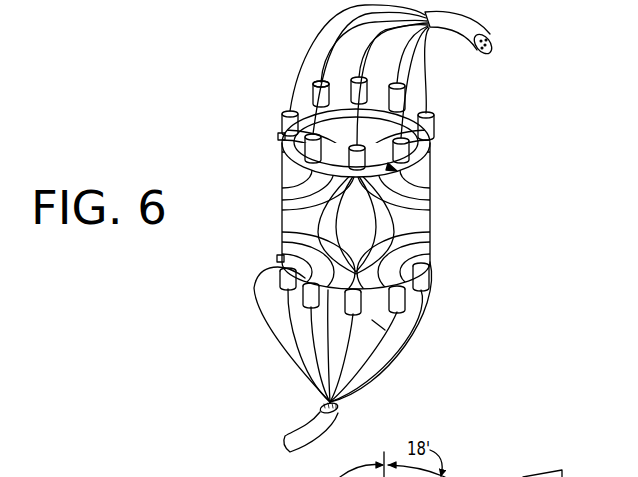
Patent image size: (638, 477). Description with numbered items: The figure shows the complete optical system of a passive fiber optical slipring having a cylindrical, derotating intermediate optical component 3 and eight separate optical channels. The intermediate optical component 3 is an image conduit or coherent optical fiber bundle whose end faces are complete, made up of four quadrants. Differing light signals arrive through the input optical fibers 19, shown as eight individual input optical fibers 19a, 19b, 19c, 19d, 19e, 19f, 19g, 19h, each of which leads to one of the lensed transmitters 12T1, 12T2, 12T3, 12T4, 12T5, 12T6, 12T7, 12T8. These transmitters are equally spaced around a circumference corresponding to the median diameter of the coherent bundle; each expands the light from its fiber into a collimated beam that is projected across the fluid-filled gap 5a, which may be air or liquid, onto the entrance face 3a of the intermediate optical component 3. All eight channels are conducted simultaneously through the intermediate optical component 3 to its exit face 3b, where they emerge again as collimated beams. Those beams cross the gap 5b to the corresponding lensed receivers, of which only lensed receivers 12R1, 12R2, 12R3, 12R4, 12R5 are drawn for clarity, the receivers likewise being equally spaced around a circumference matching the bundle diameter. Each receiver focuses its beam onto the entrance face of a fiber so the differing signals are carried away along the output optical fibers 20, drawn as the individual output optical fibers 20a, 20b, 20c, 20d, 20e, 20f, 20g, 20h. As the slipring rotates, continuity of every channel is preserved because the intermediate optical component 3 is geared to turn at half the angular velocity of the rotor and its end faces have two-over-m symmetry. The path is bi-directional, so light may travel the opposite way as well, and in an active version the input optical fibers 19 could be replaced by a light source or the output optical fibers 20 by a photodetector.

The intermediate optical component 3 is at (361, 231).
The entrance face 3a is at (413, 170).
The exit face 3b is at (372, 320).
The gap 5a is at (278, 136).
The gap 5b is at (277, 258).
The lensed transmitter 12T1 is at (448, 147).
The lensed transmitter 12T2 is at (395, 148).
The lensed transmitter 12T3 is at (349, 150).
The lensed transmitter 12T4 is at (282, 148).
The lensed transmitter 12T5 is at (312, 97).
The lensed transmitter 12T6 is at (243, 78).
The lensed transmitter 12T7 is at (313, 59).
The lensed transmitter 12T8 is at (420, 92).
The lensed receiver 12R1 is at (430, 278).
The lensed receiver 12R2 is at (407, 298).
The lensed receiver 12R3 is at (372, 350).
The lensed receiver 12R4 is at (299, 346).
The lensed receiver 12R5 is at (285, 287).
The input optical fibers 19 is at (488, 34).
The input optical fiber 19a is at (433, 82).
The input optical fiber 19b is at (420, 73).
The input optical fiber 19c is at (420, 73).
The input optical fiber 19d is at (368, 78).
The input optical fiber 19e is at (299, 48).
The input optical fiber 19f is at (308, 20).
The input optical fiber 19g is at (412, 42).
The input optical fiber 19h is at (433, 65).
The output optical fibers 20 is at (340, 408).
The output optical fiber 20a is at (420, 313).
The output optical fiber 20b is at (365, 365).
The output optical fiber 20c is at (393, 375).
The output optical fiber 20d is at (308, 372).
The output optical fiber 20e is at (290, 322).
The output optical fiber 20f is at (262, 265).
The output optical fiber 20g is at (281, 278).
The output optical fiber 20h is at (425, 260).